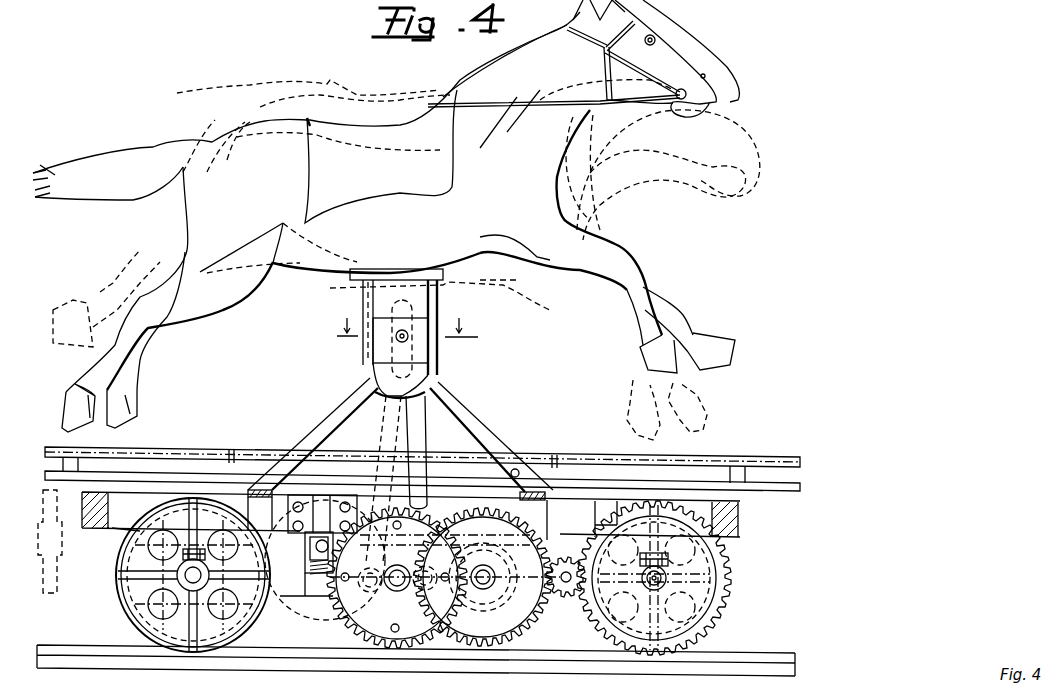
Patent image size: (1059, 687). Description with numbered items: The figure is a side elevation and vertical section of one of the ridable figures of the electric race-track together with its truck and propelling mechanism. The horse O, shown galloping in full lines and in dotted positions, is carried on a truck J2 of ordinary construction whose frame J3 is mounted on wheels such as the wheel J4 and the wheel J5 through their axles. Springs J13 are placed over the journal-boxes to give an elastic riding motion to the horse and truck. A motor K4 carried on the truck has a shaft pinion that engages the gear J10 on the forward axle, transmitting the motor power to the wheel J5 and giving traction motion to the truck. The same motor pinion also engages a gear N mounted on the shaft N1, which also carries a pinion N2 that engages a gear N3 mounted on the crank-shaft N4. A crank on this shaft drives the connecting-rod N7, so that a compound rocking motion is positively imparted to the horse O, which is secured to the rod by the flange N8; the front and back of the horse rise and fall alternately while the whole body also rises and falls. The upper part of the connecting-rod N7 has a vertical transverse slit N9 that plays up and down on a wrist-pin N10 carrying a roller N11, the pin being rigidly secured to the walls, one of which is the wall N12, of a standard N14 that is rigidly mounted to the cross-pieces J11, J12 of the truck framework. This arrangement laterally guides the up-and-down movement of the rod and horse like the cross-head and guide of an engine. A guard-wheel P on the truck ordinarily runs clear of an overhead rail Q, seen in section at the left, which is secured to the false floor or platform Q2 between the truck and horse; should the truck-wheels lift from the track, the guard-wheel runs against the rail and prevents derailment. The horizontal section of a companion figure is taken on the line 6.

The horse O is at (396, 220).
The flange N8 is at (402, 260).
The vertical transverse slit N9 is at (397, 357).
The wrist-pin N10 is at (405, 338).
The roller N11 is at (403, 348).
The wall of standard N12 is at (400, 380).
The standard N14 is at (322, 430).
The connecting-rod N7 is at (416, 441).
The section line 6 6 is at (407, 318).
The platform Q2 is at (165, 460).
The overhead rail Q is at (50, 474).
The cross-piece J11 is at (231, 460).
The cross-piece J12 is at (553, 460).
The frame J3 is at (411, 516).
The guard-wheel P is at (47, 507).
The truck J2 is at (115, 535).
The wheel J4 is at (128, 613).
The spring J13 is at (183, 556).
The gear N3 is at (397, 578).
The crank-shaft N4 is at (370, 589).
The shaft N1 is at (487, 587).
The pinion N2 is at (497, 577).
The gear N is at (466, 642).
The motor K4 is at (566, 592).
The wheel J5 is at (727, 607).
The gear J10 is at (725, 593).